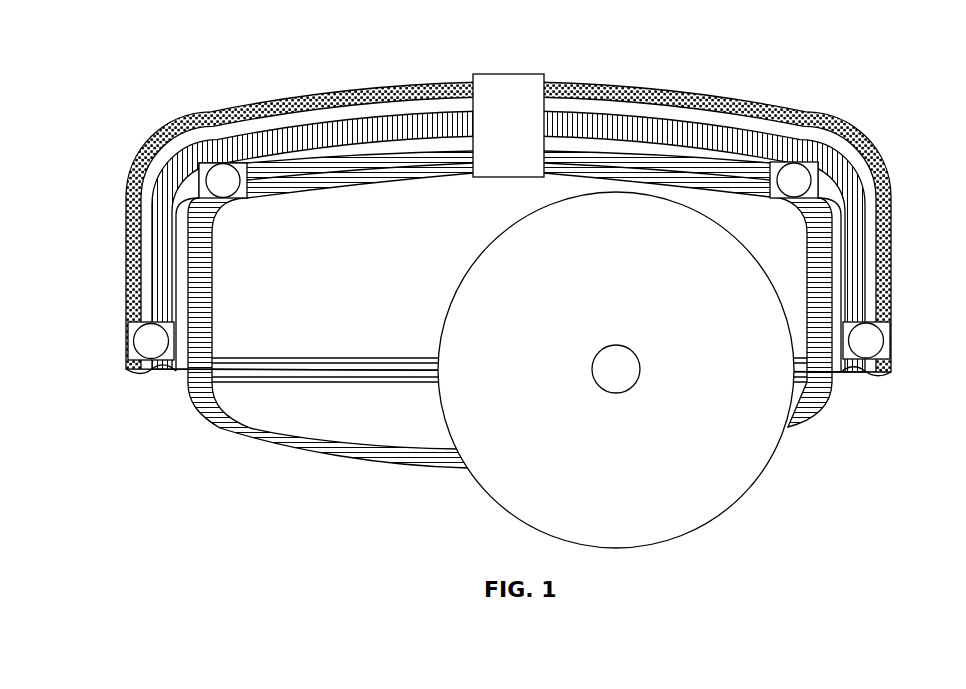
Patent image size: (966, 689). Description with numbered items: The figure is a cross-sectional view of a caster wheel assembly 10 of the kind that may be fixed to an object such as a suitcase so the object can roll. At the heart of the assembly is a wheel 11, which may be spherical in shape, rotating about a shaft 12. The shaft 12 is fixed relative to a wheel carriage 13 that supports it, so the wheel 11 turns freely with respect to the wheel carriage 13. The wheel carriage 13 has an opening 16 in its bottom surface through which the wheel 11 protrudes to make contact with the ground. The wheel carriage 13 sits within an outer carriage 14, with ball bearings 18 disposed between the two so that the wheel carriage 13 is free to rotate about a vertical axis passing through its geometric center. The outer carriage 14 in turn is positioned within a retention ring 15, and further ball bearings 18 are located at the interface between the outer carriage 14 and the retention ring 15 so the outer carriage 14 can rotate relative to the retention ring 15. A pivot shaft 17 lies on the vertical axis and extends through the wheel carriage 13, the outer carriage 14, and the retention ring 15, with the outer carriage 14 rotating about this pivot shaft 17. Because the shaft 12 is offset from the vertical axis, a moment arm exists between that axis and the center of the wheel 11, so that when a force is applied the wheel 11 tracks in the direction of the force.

The caster wheel assembly 10 is at (514, 283).
The wheel 11 is at (738, 292).
The shaft 12 is at (630, 400).
The wheel carriage 13 is at (835, 222).
The outer carriage 14 is at (758, 147).
The retention ring 15 is at (718, 98).
The opening 16 is at (805, 388).
The pivot shaft 17 is at (518, 72).
The ball bearings 18 is at (797, 181).